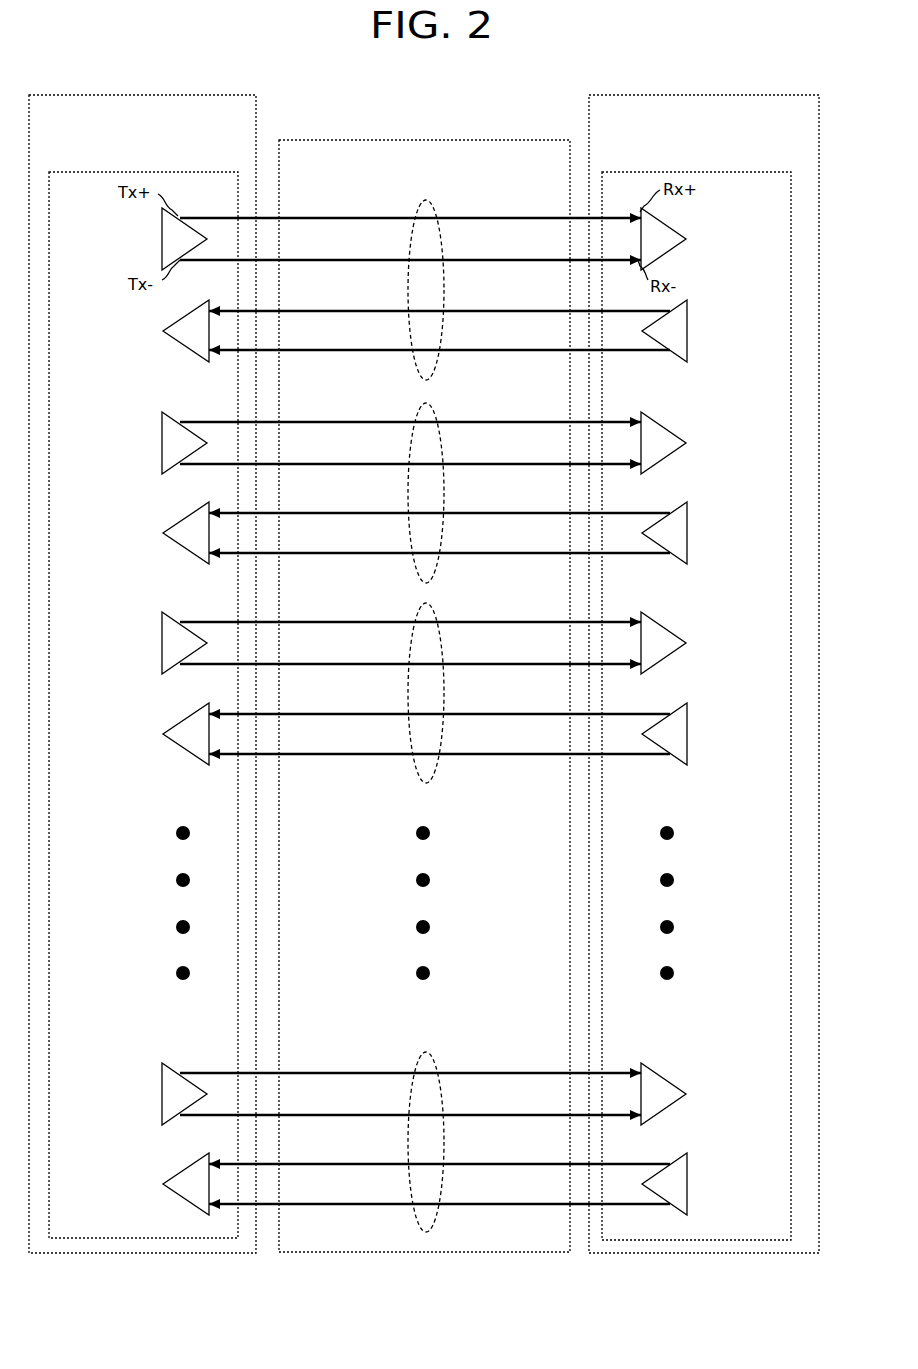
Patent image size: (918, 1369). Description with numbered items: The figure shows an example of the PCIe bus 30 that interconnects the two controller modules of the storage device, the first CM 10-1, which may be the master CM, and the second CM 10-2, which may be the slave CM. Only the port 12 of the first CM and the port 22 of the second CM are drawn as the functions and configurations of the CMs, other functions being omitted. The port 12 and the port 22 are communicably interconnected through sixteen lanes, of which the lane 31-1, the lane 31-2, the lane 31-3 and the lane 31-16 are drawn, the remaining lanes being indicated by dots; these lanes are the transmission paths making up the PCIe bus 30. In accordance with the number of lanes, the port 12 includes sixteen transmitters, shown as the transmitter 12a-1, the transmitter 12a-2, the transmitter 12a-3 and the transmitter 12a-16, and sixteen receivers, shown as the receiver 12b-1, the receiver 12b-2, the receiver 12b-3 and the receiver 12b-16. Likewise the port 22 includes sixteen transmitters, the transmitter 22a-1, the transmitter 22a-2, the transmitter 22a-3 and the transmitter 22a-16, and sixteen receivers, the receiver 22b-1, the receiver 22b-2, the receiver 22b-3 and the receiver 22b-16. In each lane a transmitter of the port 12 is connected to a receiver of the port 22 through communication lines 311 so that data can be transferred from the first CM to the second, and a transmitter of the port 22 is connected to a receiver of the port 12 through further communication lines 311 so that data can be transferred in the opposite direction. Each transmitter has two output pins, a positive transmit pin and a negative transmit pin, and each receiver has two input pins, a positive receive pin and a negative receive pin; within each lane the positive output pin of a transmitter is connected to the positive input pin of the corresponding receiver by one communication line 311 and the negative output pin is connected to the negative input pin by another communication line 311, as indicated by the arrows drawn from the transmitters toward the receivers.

The CM 10-1 is at (170, 95).
The CM 10-2 is at (645, 95).
The port 12 is at (160, 172).
The port 22 is at (640, 172).
The PCIe bus 30 is at (445, 140).
The lane 31-1 is at (430, 205).
The lane 31-2 is at (430, 408).
The lane 31-3 is at (430, 608).
The lane 31-16 is at (430, 1057).
The communication line 311 is at (300, 218).
The transmitter 12a-1 is at (162, 230).
The transmitter 12a-2 is at (162, 434).
The transmitter 12a-3 is at (162, 634).
The transmitter 12a-16 is at (162, 1085).
The receiver 12b-1 is at (175, 323).
The receiver 12b-2 is at (175, 525).
The receiver 12b-3 is at (175, 726).
The receiver 12b-16 is at (175, 1176).
The transmitter 22a-1 is at (687, 318).
The transmitter 22a-2 is at (687, 520).
The transmitter 22a-3 is at (687, 721).
The transmitter 22a-16 is at (687, 1171).
The receiver 22b-1 is at (672, 228).
The receiver 22b-2 is at (672, 432).
The receiver 22b-3 is at (672, 632).
The receiver 22b-16 is at (672, 1083).